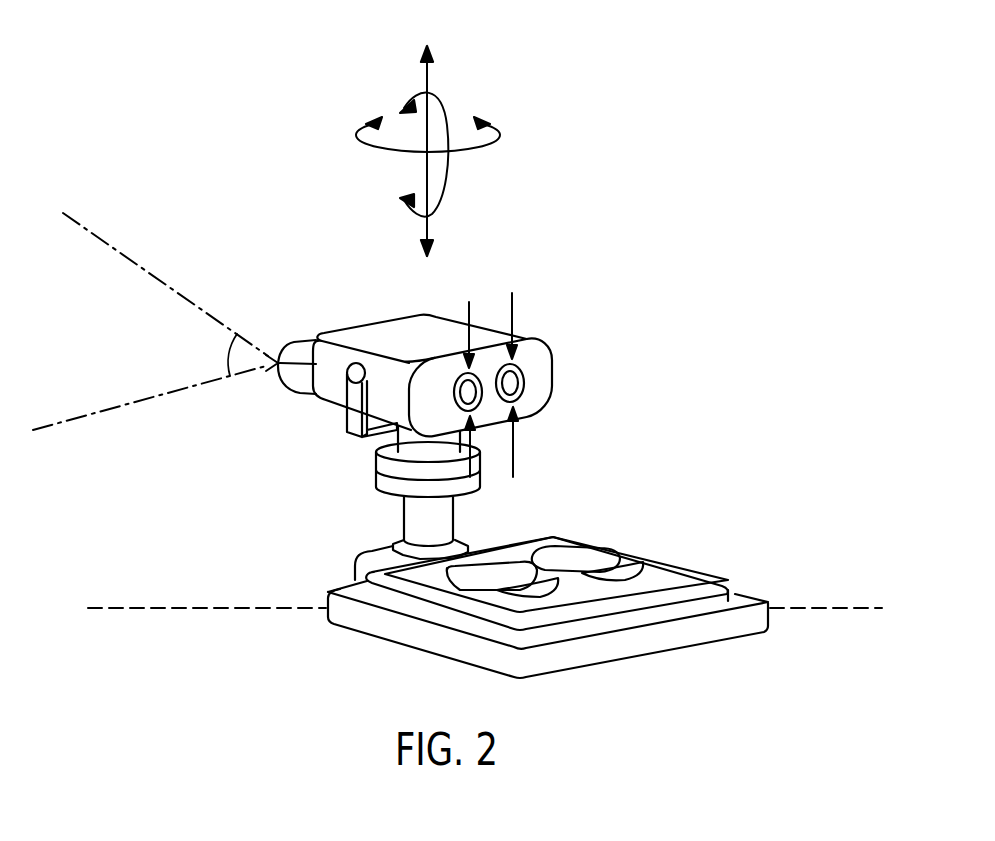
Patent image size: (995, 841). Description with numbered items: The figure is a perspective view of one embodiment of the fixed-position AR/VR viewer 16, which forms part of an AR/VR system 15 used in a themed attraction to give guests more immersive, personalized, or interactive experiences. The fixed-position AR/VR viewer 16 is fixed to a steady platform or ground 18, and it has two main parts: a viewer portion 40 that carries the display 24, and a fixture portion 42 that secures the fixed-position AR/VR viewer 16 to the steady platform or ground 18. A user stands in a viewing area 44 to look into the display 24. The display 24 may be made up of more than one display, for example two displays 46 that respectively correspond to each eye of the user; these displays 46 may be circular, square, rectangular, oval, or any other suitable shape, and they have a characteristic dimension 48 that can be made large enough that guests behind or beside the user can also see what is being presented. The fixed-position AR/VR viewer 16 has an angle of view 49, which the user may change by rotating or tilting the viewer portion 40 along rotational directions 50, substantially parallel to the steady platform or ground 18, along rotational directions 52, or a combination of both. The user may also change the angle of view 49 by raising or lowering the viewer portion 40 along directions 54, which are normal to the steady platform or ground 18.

The AR/VR system 15 is at (692, 153).
The fixed-position AR/VR viewer 16 is at (632, 192).
The steady platform or ground 18 is at (204, 608).
The display 24 is at (582, 384).
The viewer portion 40 is at (538, 281).
The fixture portion 42 is at (572, 512).
The viewing area 44 is at (647, 528).
The displays 46 is at (523, 386).
The characteristic dimension 48 is at (513, 467).
The angle of view 49 is at (222, 354).
The rotational directions 50 is at (472, 148).
The rotational directions 52 is at (447, 172).
The directions 54 is at (428, 80).